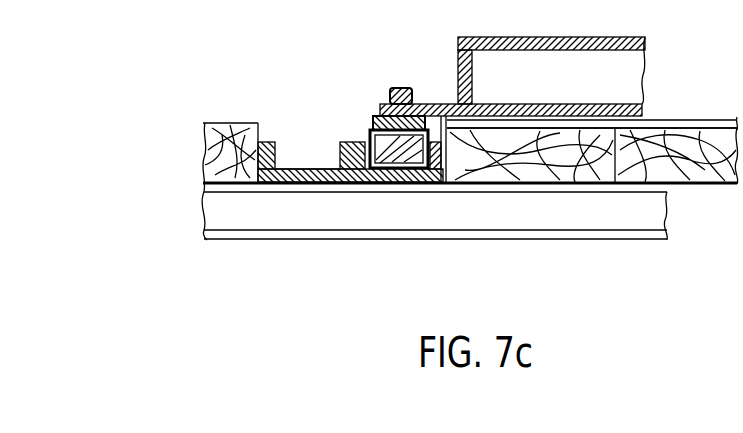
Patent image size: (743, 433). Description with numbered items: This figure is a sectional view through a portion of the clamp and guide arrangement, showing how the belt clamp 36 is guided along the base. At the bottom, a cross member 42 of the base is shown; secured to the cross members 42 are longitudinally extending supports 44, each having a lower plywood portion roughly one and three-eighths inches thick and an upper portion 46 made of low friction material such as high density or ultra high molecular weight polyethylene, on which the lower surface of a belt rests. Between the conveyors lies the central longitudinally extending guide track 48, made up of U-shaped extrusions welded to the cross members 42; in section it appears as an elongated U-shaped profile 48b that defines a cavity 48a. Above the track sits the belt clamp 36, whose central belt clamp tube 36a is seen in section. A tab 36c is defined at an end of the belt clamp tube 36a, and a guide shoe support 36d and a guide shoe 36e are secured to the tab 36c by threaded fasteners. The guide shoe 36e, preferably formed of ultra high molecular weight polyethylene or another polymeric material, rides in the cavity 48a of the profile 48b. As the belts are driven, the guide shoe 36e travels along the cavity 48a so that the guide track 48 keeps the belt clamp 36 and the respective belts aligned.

The belt clamp 36 is at (427, 91).
The belt clamp tube 36a is at (603, 37).
The tab 36c is at (392, 58).
The guide shoe support 36d is at (372, 117).
The guide shoe 36e is at (369, 131).
The cross members 42 is at (532, 219).
The supports 44 is at (682, 186).
The upper portion 46 is at (655, 111).
The guide track 48 is at (277, 148).
The cavity 48a is at (308, 153).
The U-shaped profiles 48b is at (398, 185).